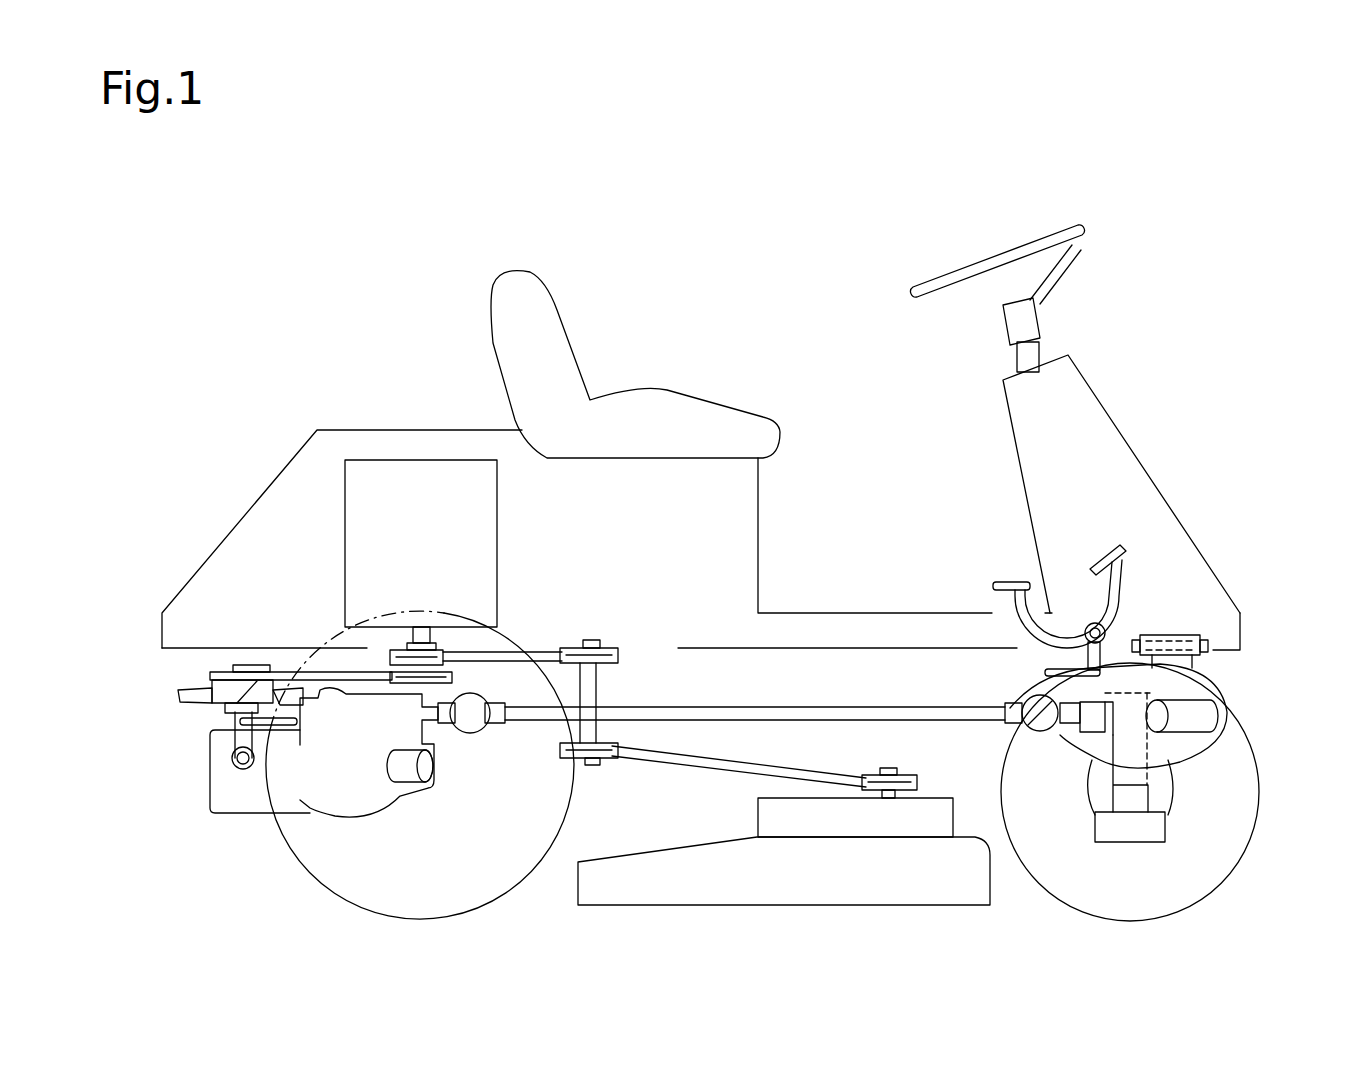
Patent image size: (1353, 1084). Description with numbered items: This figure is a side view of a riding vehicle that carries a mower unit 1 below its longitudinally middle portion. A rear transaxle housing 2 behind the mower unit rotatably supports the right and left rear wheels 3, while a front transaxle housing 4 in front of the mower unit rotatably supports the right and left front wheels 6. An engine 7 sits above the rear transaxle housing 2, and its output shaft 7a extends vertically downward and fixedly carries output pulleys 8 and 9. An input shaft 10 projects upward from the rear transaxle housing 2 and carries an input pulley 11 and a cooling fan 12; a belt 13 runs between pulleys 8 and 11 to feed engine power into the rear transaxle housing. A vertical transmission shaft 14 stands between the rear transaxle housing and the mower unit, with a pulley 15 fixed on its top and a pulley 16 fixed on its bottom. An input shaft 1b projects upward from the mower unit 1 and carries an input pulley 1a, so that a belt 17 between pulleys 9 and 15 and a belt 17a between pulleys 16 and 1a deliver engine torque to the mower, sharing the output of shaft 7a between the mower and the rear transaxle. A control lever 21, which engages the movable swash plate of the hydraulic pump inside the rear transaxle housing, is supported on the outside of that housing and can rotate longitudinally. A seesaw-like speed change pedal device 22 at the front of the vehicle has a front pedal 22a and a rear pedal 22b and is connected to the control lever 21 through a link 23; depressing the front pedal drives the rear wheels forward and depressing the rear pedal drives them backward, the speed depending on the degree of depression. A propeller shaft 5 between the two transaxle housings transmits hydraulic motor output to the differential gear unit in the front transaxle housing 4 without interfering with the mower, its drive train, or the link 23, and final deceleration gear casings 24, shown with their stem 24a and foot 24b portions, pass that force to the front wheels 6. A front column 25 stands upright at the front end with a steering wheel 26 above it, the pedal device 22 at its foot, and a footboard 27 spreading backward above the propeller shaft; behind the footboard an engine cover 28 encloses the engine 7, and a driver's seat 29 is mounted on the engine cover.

The mower unit 1 is at (703, 840).
The input pulley 1a is at (893, 777).
The input shaft 1b is at (884, 770).
The rear transaxle housing 2 is at (345, 793).
The rear wheels 3 is at (290, 865).
The front transaxle housing 4 is at (1218, 688).
The propeller shaft 5 is at (735, 706).
The front wheels 6 is at (1257, 785).
The engine 7 is at (430, 555).
The output shaft 7a is at (440, 630).
The output pulley 8 is at (445, 678).
The output pulley 9 is at (400, 646).
The input shaft 10 is at (243, 663).
The input pulley 11 is at (210, 675).
The cooling fan 12 is at (178, 695).
The belt 13 is at (285, 680).
The vertical transmission shaft 14 is at (598, 692).
The pulley 15 is at (592, 648).
The pulley 16 is at (600, 762).
The belt 17 is at (498, 650).
The belt 17a is at (740, 765).
The control lever 21 is at (232, 730).
The speed change pedal device 22 is at (1127, 595).
The front pedal 22a is at (1108, 562).
The rear pedal 22b is at (1010, 582).
The link 23 is at (1048, 668).
The final deceleration gear casings 24 is at (1130, 862).
The caster stem 24a is at (1100, 756).
The caster foot 24b is at (1100, 828).
The front column 25 is at (1148, 466).
The steering wheel 26 is at (1085, 240).
The footboard 27 is at (890, 612).
The engine cover 28 is at (425, 428).
The driver's seat 29 is at (572, 327).